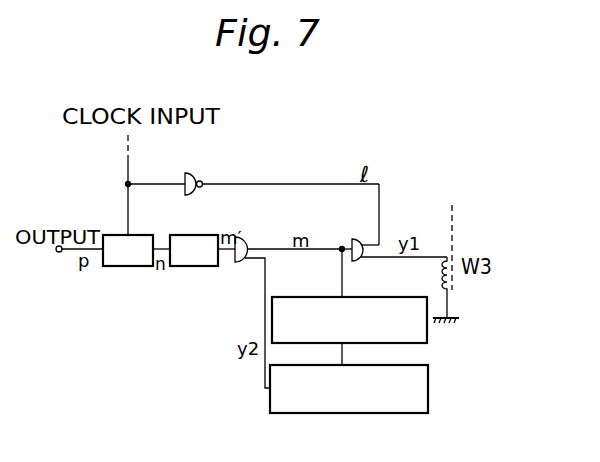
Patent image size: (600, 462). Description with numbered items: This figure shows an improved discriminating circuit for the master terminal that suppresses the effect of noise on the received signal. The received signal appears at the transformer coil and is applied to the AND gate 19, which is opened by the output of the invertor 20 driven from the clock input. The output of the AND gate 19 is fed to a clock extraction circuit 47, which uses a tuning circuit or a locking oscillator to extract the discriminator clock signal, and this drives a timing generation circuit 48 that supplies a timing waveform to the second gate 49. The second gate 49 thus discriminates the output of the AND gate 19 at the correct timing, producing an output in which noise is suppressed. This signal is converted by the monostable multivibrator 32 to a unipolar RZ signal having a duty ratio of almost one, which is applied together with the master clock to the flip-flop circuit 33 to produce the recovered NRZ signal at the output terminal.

The invertor 20 is at (196, 173).
The AND gate A3 19 is at (357, 239).
The gate A3' 49 is at (245, 237).
The clock extraction circuit 47 is at (315, 297).
The timing generation circuit 48 is at (300, 413).
The flip-flop circuit FF1 33 is at (135, 266).
The monostable multivibrator MM 32 is at (193, 266).